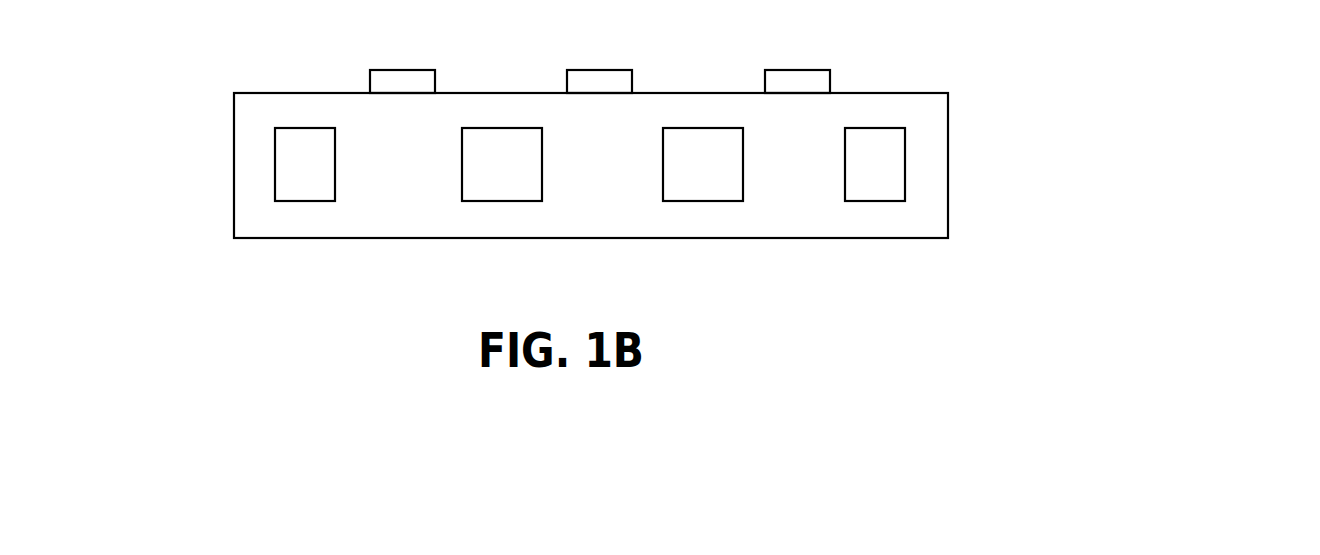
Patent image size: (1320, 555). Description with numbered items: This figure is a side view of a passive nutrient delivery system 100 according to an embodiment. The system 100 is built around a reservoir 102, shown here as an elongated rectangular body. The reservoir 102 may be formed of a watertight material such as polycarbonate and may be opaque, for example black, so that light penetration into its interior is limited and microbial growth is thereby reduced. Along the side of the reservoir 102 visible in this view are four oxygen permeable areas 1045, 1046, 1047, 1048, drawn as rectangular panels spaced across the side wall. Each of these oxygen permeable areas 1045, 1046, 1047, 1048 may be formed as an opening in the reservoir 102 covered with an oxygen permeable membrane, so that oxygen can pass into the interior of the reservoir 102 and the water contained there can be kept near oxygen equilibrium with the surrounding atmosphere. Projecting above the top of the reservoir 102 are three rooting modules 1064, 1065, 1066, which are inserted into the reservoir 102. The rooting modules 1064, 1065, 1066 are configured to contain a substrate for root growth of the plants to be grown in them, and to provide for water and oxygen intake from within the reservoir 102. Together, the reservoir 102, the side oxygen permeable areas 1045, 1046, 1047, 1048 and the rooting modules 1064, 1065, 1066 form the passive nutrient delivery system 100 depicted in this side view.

The passive nutrient delivery system 100 is at (1143, 106).
The reservoir 102 is at (948, 208).
The oxygen permeable area 1045 is at (305, 203).
The oxygen permeable area 1046 is at (505, 203).
The oxygen permeable area 1047 is at (702, 203).
The oxygen permeable area 1048 is at (872, 203).
The rooting module 1064 is at (402, 70).
The rooting module 1065 is at (601, 70).
The rooting module 1066 is at (798, 70).